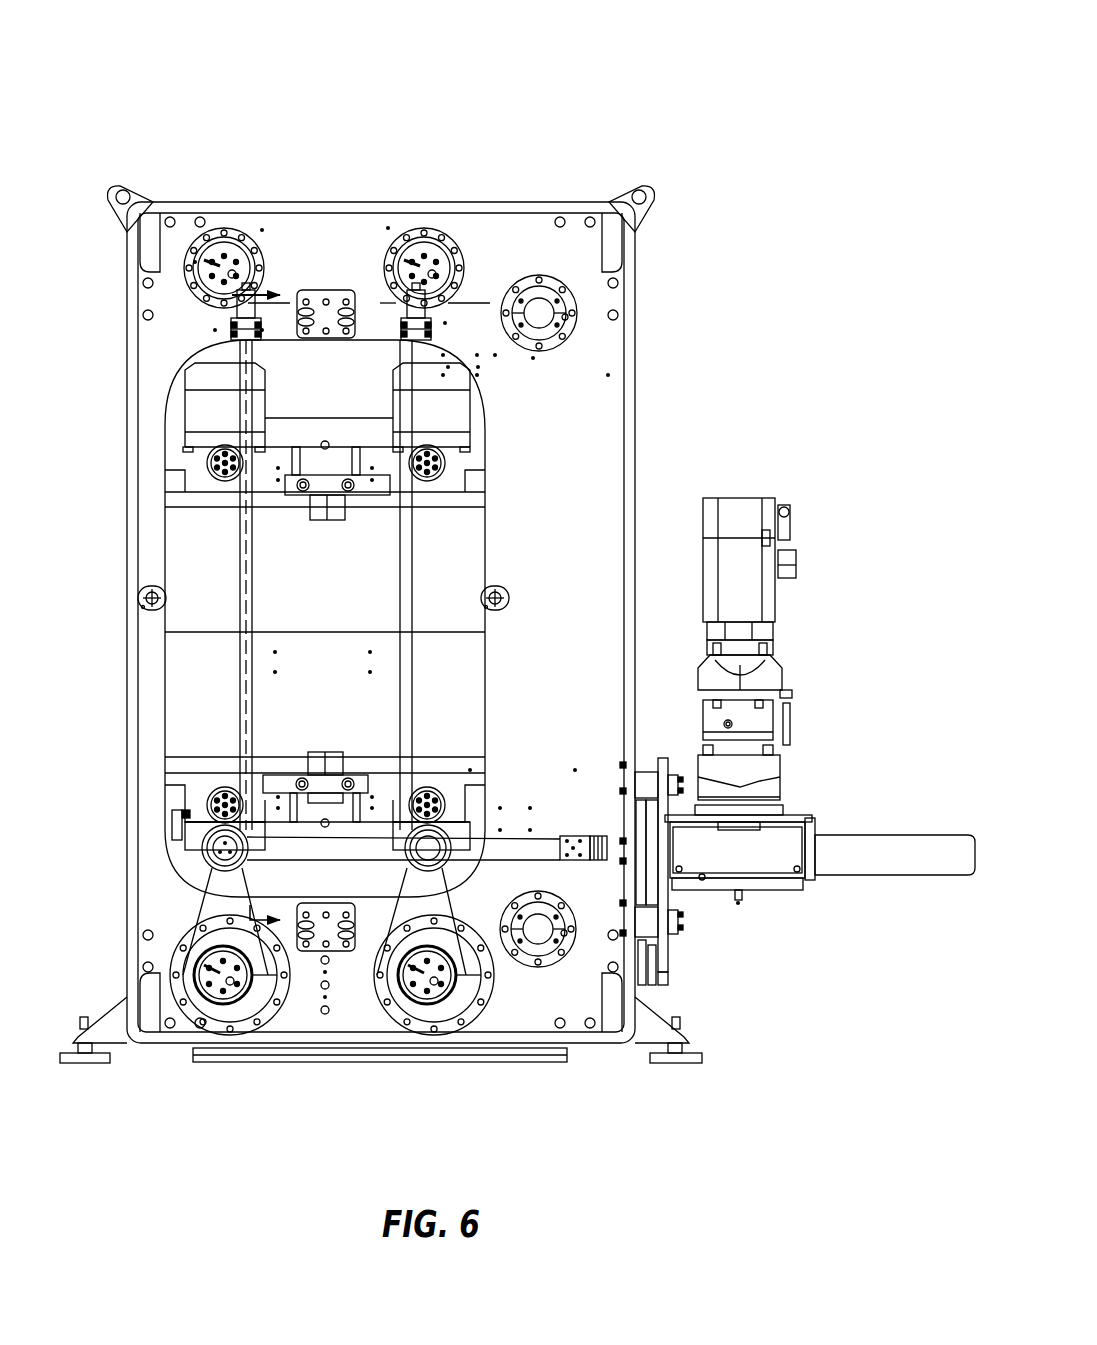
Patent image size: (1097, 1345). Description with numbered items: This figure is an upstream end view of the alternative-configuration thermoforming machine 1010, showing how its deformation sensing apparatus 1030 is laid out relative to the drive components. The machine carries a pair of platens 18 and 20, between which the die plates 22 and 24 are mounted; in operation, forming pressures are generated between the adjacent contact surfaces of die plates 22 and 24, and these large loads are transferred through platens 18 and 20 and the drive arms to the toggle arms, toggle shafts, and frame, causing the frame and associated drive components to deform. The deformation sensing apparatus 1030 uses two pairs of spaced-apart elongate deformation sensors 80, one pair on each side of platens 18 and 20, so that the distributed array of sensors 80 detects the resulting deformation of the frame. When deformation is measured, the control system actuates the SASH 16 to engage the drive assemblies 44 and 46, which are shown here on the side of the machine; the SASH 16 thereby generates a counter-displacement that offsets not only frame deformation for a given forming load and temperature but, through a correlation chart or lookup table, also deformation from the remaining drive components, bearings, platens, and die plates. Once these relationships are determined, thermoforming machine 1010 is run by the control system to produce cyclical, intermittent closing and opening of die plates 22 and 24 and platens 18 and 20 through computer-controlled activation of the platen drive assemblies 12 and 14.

The thermoforming machine 1010 is at (95, 120).
The platen drive assembly 12 is at (492, 240).
The platen drive assembly 14 is at (153, 893).
The SASH 16 is at (816, 718).
The platen 18 is at (198, 408).
The platen 20 is at (207, 866).
The die plate 22 is at (340, 579).
The die plate 24 is at (340, 677).
The elongate deformation sensor 80 is at (240, 537).
The deformation sensing apparatus 1030 is at (330, 702).
The drive assembly 44 is at (752, 916).
The drive assembly 46 is at (737, 850).